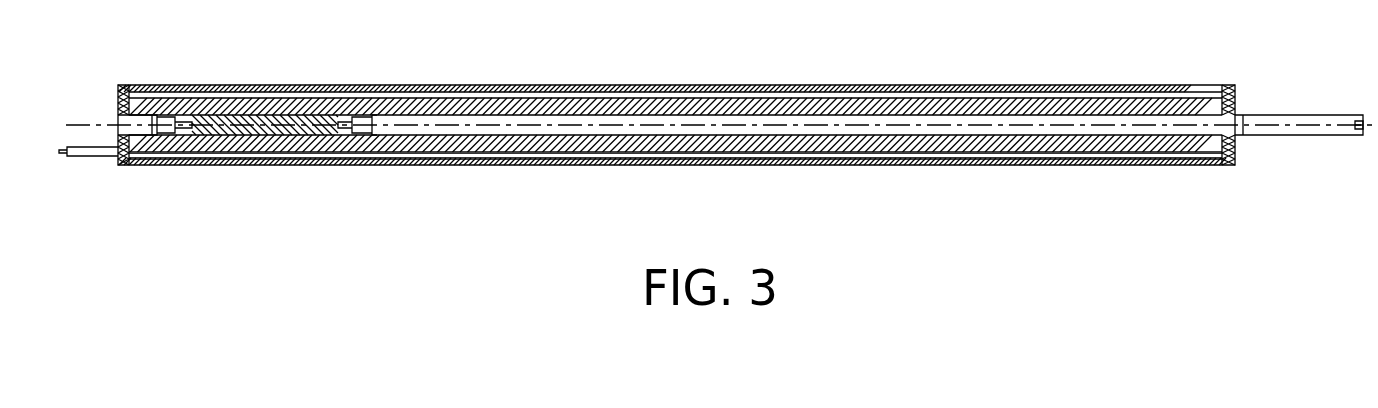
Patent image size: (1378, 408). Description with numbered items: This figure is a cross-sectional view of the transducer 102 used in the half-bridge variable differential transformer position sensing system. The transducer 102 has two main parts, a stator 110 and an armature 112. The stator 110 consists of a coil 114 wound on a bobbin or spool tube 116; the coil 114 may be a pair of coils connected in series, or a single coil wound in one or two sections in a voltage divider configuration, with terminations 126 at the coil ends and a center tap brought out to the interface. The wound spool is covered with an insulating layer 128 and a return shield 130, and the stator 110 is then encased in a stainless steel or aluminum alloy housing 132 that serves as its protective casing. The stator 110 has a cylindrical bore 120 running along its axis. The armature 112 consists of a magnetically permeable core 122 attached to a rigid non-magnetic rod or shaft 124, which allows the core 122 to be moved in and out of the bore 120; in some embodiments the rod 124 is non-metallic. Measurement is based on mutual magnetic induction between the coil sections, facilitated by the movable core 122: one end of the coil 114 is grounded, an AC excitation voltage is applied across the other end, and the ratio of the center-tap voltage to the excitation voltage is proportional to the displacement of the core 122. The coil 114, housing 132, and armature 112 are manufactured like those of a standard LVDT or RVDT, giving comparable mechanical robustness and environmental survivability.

The transducer 102 is at (716, 153).
The stator 110 is at (771, 153).
The armature 112 is at (940, 125).
The coils 114 is at (472, 100).
The bobbin 116 is at (600, 113).
The cylindrical bore 120 is at (1247, 101).
The magnetically permeable core 122 is at (1118, 125).
The shaft 124 is at (1275, 130).
The terminations 126 is at (93, 158).
The insulating layer 128 is at (1147, 153).
The return shield 130 is at (1008, 152).
The housing 132 is at (648, 168).